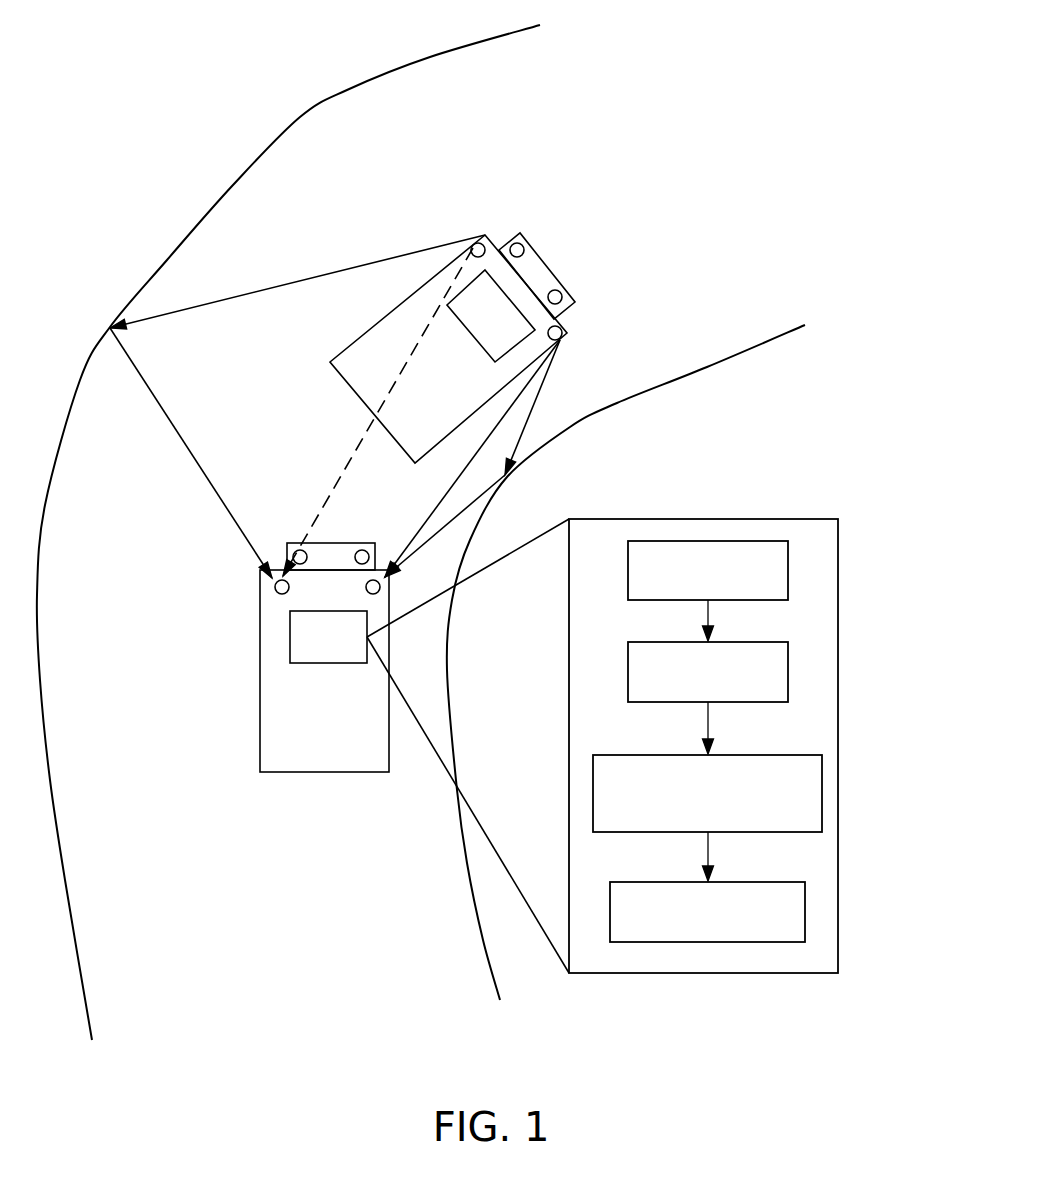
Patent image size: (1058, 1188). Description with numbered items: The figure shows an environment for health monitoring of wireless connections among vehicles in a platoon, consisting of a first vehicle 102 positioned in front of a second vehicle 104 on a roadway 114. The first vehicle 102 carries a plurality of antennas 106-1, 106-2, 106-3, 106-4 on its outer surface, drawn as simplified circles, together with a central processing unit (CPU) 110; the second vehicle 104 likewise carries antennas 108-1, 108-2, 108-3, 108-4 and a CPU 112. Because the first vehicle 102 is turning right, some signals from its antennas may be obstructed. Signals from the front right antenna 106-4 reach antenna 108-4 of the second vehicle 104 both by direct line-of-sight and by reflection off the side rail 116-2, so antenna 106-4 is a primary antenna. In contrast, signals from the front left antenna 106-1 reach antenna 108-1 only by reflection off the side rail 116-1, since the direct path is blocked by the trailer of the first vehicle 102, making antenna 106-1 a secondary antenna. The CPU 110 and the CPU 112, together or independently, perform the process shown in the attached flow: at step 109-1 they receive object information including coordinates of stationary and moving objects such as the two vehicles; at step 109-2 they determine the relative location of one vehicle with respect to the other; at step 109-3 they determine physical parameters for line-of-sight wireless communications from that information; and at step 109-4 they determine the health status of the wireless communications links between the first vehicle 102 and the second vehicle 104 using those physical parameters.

The first vehicle 102 is at (350, 350).
The second vehicle 104 is at (260, 727).
The antenna 106-1 is at (483, 241).
The antenna 106-2 is at (525, 240).
The antenna 106-3 is at (562, 290).
The antenna 106-4 is at (567, 330).
The antenna 108-1 is at (274, 588).
The antenna 108-2 is at (300, 550).
The antenna 108-3 is at (362, 550).
The antenna 108-4 is at (386, 590).
The receiving object information step 109-1 is at (788, 569).
The determining relative location step 109-2 is at (788, 672).
The determining physical parameters for line-of-sight step 109-3 is at (822, 798).
The determining health status step 109-4 is at (805, 913).
The central processing unit (CPU) 110 is at (480, 345).
The CPU 112 is at (290, 633).
The roadway 114 is at (307, 140).
The side rail 116-1 is at (90, 370).
The side rail 116-2 is at (570, 428).